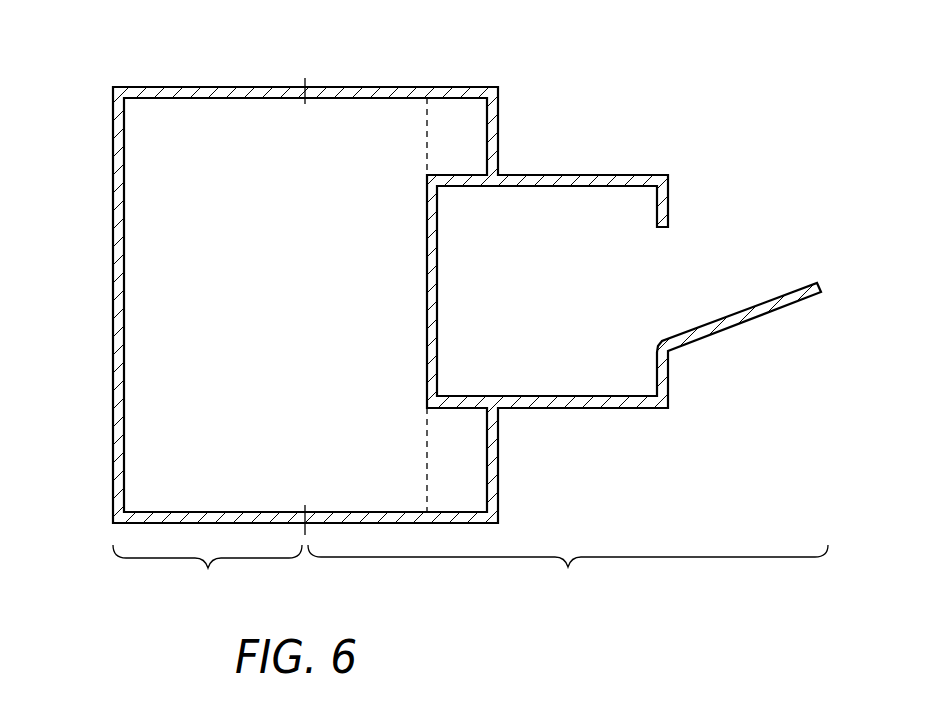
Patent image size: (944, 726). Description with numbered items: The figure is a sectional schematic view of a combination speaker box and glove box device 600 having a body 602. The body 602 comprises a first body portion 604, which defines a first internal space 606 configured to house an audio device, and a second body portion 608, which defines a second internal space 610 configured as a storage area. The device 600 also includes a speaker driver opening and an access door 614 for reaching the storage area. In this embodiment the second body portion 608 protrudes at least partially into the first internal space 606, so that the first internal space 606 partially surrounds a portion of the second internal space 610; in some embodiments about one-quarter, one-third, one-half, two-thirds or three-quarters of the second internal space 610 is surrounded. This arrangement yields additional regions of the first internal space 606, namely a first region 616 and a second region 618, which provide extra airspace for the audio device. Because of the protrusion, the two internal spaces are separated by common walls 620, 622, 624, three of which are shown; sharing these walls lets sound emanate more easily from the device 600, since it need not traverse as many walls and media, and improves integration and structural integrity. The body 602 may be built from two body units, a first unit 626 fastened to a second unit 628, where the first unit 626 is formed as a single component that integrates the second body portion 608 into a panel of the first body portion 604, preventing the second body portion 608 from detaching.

The combination speaker box and glove box device 600 is at (675, 78).
The body 602 is at (113, 125).
The first body portion 604 is at (173, 86).
The first internal space 606 is at (262, 148).
The second body portion 608 is at (628, 175).
The second internal space 610 is at (568, 339).
The access door 614 is at (727, 333).
The first region 616 is at (458, 113).
The second region 618 is at (460, 485).
The common wall 620 is at (463, 175).
The common wall 622 is at (468, 425).
The common wall 624 is at (437, 222).
The first unit 626 is at (568, 566).
The second unit 628 is at (208, 566).